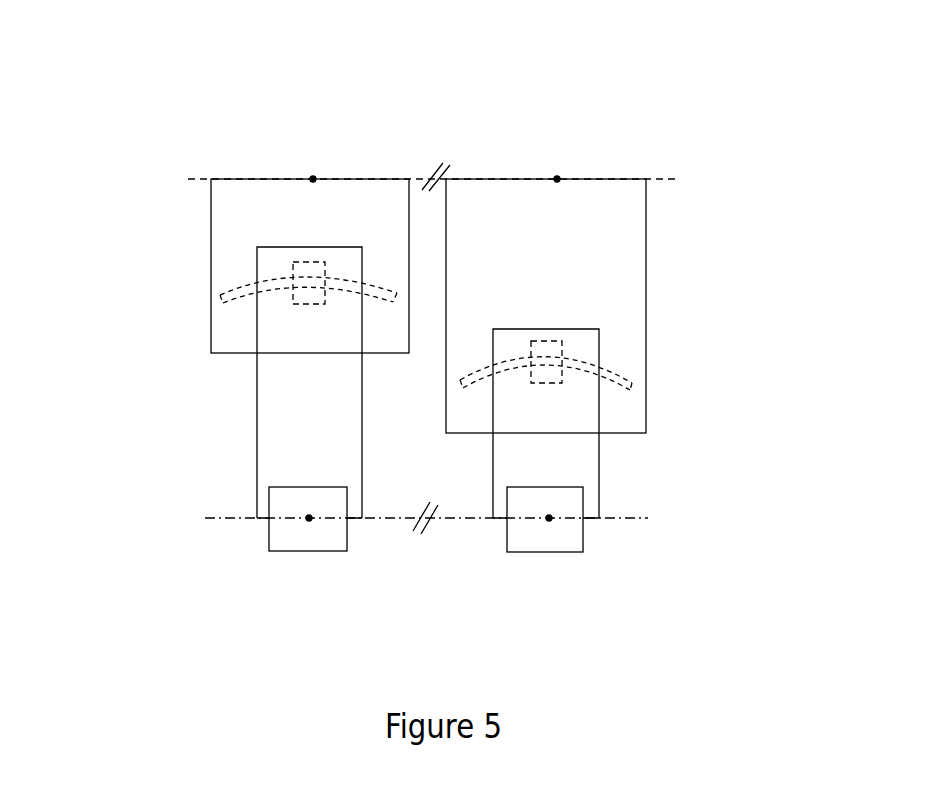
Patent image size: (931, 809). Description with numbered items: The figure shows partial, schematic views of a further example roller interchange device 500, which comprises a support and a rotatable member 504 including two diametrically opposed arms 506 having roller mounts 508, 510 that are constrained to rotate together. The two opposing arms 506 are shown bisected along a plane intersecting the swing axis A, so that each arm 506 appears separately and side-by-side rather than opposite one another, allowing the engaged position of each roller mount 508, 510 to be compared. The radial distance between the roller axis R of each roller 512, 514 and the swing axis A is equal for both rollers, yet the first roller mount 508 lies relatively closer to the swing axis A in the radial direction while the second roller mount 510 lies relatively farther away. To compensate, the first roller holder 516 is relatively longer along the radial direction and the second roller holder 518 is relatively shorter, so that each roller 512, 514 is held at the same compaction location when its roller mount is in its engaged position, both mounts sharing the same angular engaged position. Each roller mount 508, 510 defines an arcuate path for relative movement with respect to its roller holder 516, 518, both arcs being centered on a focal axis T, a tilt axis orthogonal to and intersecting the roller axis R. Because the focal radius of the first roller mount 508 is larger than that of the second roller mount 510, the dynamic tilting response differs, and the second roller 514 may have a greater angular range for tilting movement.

The roller interchange device 500 is at (118, 48).
The rotatable member 504 is at (208, 337).
The arms 506 is at (222, 215).
The first roller mount 508 is at (228, 293).
The second roller mount 510 is at (626, 380).
The first roller 512 is at (290, 540).
The second roller 514 is at (560, 540).
The first roller holder 516 is at (265, 440).
The second roller holder 518 is at (580, 465).
The swing axis A is at (313, 179).
The roller axis R is at (640, 524).
The focal axis T is at (312, 522).